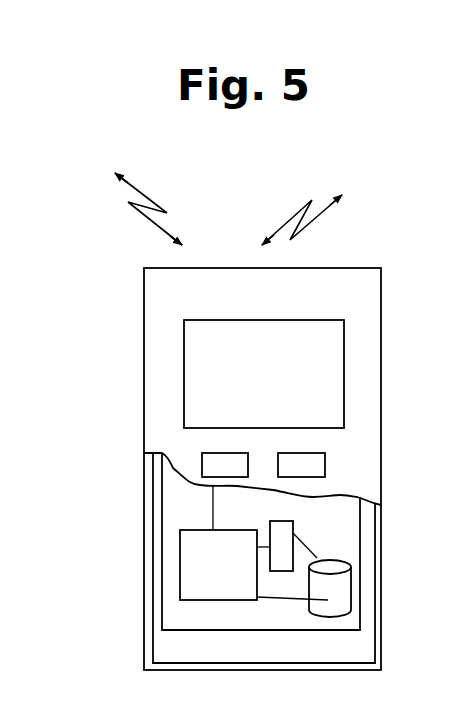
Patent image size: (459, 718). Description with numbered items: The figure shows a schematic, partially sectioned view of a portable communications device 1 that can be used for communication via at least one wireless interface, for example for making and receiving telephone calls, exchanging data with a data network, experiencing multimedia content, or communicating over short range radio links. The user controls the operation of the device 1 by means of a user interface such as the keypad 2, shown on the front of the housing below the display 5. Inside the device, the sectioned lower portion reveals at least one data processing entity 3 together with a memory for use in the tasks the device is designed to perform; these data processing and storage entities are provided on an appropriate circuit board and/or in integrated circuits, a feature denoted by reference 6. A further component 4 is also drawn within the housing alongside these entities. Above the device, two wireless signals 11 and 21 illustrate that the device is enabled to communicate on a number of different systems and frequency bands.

The portable communications device 1 is at (144, 305).
The display 5 is at (184, 360).
The keypad 2 is at (202, 465).
The data processing entity 3 is at (180, 555).
The circuit board and/or integrated circuits 6 is at (197, 617).
The energy store (battery) 4 is at (307, 599).
The wireless signal 11 is at (153, 202).
The wireless signal 21 is at (287, 223).